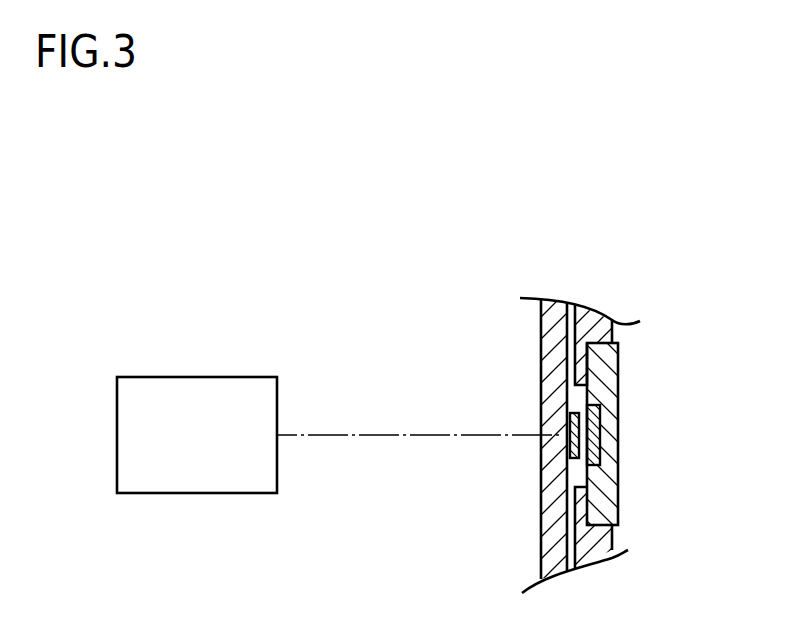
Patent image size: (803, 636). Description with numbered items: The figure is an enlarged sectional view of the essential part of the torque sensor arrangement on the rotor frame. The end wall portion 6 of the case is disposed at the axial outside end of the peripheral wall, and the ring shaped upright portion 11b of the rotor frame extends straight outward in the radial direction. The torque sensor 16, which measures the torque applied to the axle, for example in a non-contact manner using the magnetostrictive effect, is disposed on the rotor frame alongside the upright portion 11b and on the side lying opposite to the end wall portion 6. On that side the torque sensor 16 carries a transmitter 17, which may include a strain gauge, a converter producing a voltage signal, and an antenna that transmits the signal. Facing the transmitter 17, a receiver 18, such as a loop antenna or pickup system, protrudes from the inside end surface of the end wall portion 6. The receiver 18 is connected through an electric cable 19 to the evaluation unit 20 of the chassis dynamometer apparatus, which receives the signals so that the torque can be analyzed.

The end wall portion 6 is at (500, 363).
The upright portion 11b is at (627, 340).
The torque sensor 16 is at (613, 390).
The transmitter 17 is at (599, 437).
The receiver 18 is at (570, 445).
The electric cable 19 is at (396, 436).
The evaluation unit 20 is at (210, 455).